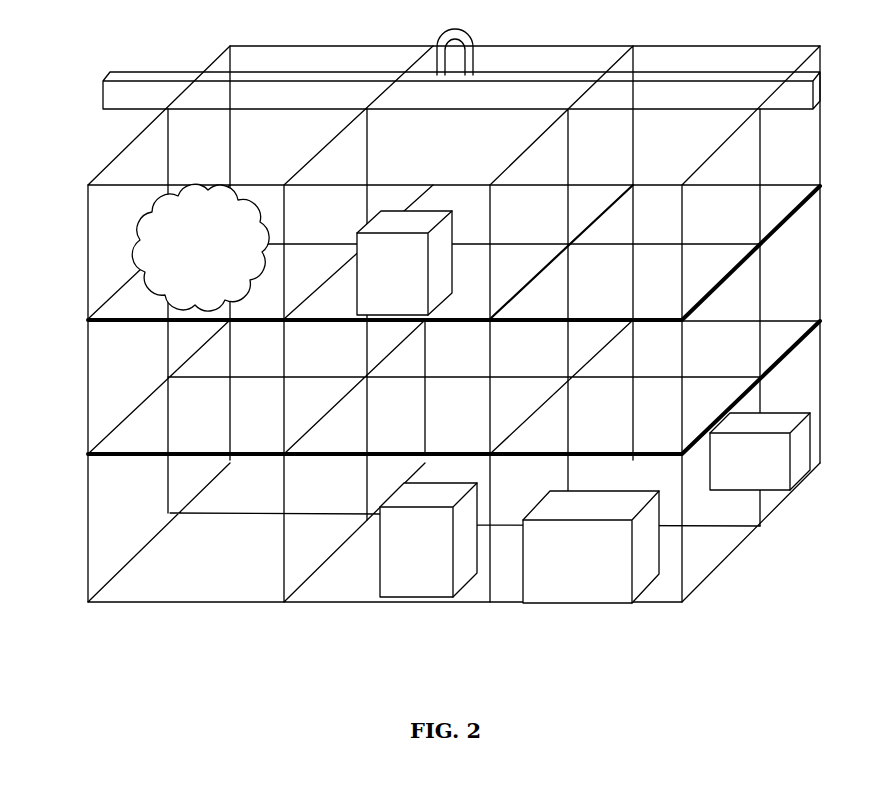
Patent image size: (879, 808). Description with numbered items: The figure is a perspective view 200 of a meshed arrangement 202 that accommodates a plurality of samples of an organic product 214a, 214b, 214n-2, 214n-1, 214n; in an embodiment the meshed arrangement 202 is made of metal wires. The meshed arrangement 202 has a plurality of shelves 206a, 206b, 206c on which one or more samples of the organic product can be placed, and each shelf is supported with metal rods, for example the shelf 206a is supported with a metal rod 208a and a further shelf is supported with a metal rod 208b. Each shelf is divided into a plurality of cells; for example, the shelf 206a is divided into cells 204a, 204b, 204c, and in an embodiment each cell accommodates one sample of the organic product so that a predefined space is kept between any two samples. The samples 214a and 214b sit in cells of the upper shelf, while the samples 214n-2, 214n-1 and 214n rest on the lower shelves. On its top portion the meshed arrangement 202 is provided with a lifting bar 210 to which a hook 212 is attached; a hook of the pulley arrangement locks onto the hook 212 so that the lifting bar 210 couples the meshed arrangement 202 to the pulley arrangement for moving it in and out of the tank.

The perspective view 200 is at (368, 622).
The meshed arrangement 202 is at (476, 47).
The cell 204a is at (280, 161).
The cell 204b is at (460, 163).
The cell 204c is at (693, 157).
The shelf 206a is at (118, 308).
The shelf 206b is at (118, 443).
The shelf 206c is at (118, 596).
The metal rod 208a is at (140, 319).
The metal rod 208b is at (140, 455).
The lifting bar 210 is at (104, 104).
The hook 212 is at (465, 32).
The sample of organic product 214a is at (218, 271).
The sample of organic product 214b is at (418, 283).
The sample of organic product 214n is at (758, 474).
The sample of organic product 214n-2 is at (447, 569).
The sample of organic product 214n-1 is at (615, 569).